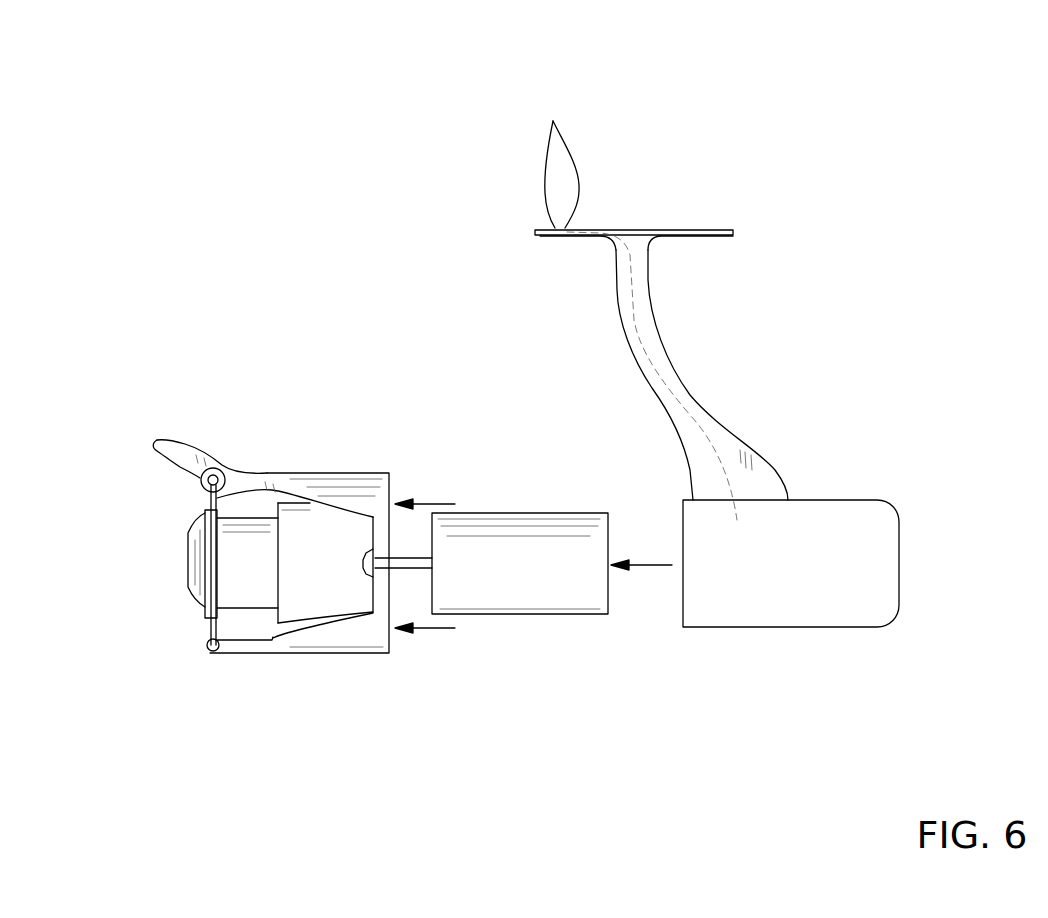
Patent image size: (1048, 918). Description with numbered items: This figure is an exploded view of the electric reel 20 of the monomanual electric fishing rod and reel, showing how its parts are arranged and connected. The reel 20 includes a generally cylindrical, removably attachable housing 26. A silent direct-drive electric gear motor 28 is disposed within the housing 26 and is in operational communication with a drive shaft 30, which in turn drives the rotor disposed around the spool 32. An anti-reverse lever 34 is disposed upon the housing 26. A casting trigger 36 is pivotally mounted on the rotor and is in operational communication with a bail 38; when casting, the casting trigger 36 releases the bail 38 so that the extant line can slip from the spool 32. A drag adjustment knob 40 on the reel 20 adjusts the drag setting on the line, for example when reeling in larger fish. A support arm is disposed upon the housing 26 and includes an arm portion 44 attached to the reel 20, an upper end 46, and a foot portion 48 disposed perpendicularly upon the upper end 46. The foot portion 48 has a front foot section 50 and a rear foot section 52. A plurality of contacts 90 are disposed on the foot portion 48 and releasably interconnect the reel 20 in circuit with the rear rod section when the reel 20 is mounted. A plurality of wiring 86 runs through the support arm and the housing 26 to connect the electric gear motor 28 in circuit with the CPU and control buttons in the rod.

The electric reel 20 is at (830, 158).
The housing 26 is at (893, 518).
The silent direct-drive electric gear motor 28 is at (515, 603).
The drive shaft 30 is at (412, 560).
The spool 32 is at (250, 540).
The anti-reverse lever 34 is at (240, 646).
The casting trigger 36 is at (163, 445).
The bail 38 is at (207, 502).
The drag adjustment knob 40 is at (192, 566).
The arm portion 44 is at (700, 417).
The upper end 46 is at (648, 250).
The foot portion 48 is at (637, 229).
The front foot section 50 is at (538, 231).
The rear foot section 52 is at (733, 232).
The plurality of wiring 86 is at (633, 326).
The plurality of contacts 90 is at (555, 155).